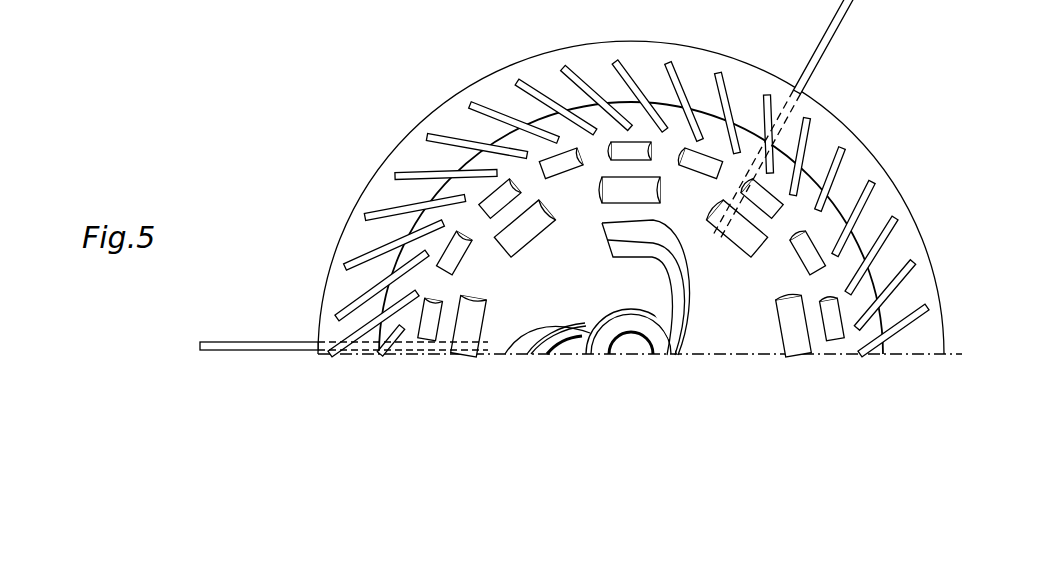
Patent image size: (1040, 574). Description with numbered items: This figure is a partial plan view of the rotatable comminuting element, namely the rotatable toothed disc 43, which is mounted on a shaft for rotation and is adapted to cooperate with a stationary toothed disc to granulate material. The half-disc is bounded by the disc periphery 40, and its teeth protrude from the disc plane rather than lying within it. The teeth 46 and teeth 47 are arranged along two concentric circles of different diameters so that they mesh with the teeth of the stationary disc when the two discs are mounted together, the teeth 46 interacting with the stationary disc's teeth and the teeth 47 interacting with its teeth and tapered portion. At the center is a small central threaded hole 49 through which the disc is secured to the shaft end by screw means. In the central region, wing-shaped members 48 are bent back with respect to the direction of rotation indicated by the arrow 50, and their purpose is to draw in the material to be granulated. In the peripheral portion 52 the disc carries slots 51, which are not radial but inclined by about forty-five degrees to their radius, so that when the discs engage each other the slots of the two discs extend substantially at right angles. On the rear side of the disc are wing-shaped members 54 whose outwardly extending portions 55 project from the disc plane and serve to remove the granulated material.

The disc periphery 40 is at (945, 354).
The rotatable toothed disc 43 is at (884, 156).
The teeth 46 is at (462, 310).
The teeth 47 is at (442, 236).
The wing-shaped members 48 is at (557, 343).
The central threaded hole 49 is at (641, 346).
The arrow 50 is at (720, 283).
The slots 51 is at (875, 246).
The peripheral portion 52 is at (910, 302).
The wing-shaped members 54 is at (648, 225).
The outwardly extending portions 55 is at (238, 342).